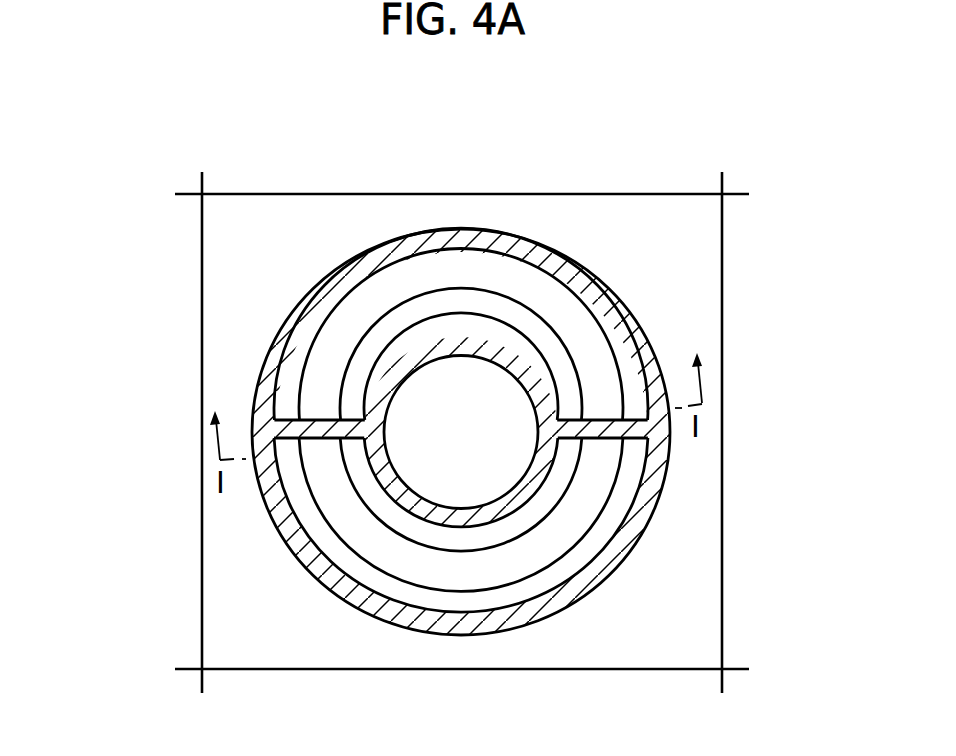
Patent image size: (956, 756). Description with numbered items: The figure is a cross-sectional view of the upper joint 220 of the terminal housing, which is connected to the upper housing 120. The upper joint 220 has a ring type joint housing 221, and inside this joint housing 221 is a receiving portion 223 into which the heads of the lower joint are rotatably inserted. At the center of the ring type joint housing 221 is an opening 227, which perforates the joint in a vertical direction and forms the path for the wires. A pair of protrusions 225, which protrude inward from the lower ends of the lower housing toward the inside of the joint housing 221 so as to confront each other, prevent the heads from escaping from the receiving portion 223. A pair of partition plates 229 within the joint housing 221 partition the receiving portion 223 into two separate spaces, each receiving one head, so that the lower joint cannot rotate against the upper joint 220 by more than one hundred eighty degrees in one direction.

The upper housing 120 is at (693, 545).
The upper joint 220 is at (143, 289).
The joint housing 221 is at (272, 504).
The receiving portion 223 is at (302, 552).
The protrusion 225 is at (363, 387).
The opening 227 is at (490, 437).
The partition plate 229 is at (613, 438).